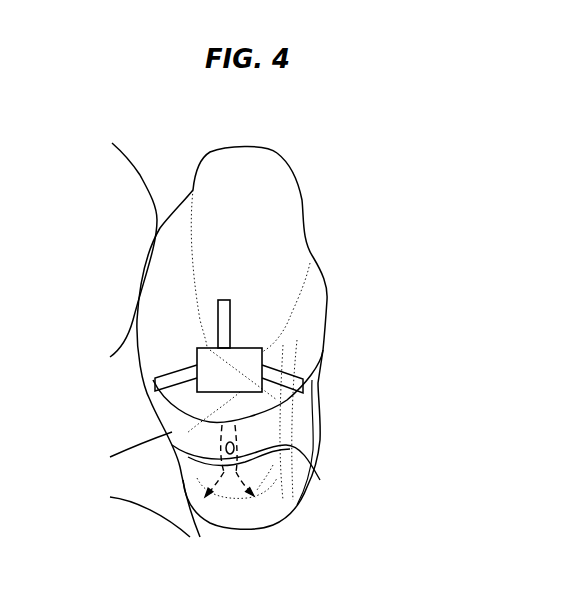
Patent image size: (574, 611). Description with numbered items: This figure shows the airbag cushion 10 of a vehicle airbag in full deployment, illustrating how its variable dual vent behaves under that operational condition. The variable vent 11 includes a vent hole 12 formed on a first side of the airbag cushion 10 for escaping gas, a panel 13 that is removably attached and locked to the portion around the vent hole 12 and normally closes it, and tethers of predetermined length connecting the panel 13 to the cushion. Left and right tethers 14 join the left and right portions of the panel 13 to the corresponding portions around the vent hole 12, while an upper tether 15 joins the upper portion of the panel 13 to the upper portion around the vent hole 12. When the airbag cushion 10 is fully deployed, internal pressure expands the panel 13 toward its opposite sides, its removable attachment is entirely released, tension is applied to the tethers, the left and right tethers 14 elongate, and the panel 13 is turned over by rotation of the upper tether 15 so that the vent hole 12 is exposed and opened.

The airbag cushion 10 is at (273, 220).
The variable vent 11 is at (263, 337).
The vent hole 12 is at (233, 446).
The panel 13 is at (243, 392).
The left and right tethers 14 is at (302, 380).
The upper tether 15 is at (232, 313).